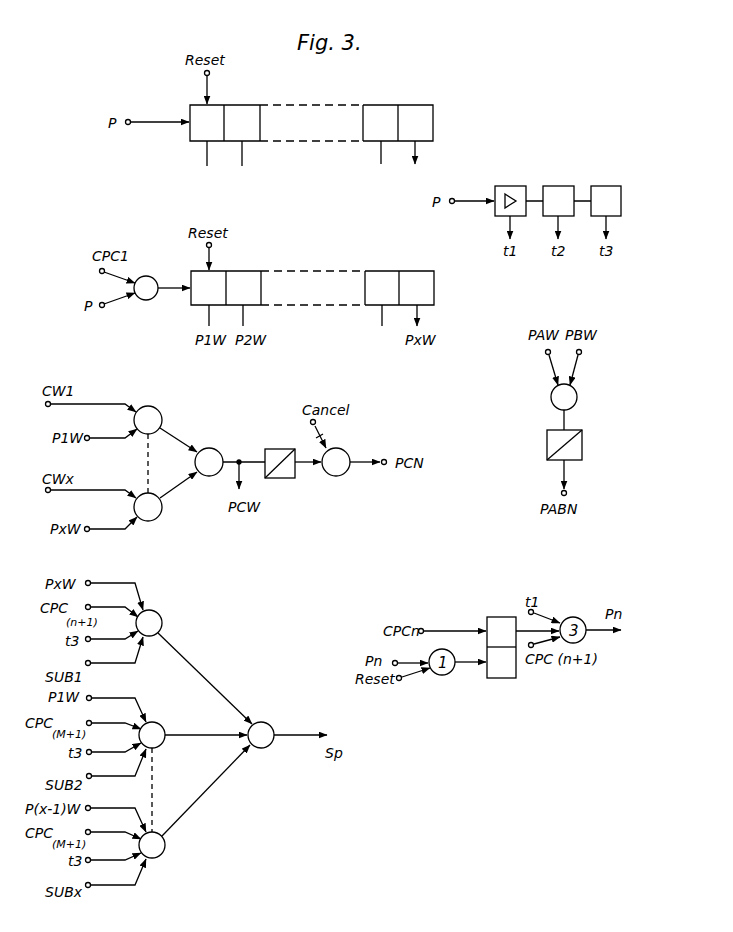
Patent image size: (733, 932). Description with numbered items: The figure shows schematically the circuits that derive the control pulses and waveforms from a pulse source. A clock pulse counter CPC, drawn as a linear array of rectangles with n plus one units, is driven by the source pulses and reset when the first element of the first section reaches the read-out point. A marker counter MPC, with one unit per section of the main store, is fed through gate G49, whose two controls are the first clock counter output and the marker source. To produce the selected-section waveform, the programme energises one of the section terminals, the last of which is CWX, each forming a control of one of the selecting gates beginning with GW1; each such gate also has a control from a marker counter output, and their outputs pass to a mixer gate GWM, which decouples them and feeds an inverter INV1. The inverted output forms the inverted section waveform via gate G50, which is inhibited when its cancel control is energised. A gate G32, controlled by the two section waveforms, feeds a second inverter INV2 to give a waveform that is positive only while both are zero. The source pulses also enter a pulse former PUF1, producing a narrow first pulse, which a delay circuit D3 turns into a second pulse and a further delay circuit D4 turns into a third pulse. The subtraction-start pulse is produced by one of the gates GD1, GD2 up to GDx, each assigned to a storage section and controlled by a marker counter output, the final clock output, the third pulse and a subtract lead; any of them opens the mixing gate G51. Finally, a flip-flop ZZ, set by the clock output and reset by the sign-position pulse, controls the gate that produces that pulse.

The clock pulse counter CPC is at (312, 124).
The marker counter MPC is at (312, 289).
The pulse former PUF1 is at (514, 203).
The delay circuit D3 is at (558, 203).
The delay circuit D4 is at (606, 203).
The gate G49 is at (162, 278).
The gate GW1 is at (165, 420).
The terminal CWX is at (165, 506).
The mixer gate GWM is at (230, 452).
The inverter INV1 is at (293, 474).
The gate G50 is at (351, 473).
The gate G32 is at (539, 407).
The inverter INV2 is at (541, 459).
The gate GD1 is at (194, 667).
The gate GD2 is at (193, 733).
The gate GDx is at (194, 801).
The mixing gate G51 is at (287, 733).
The flip-flop ZZ is at (500, 658).